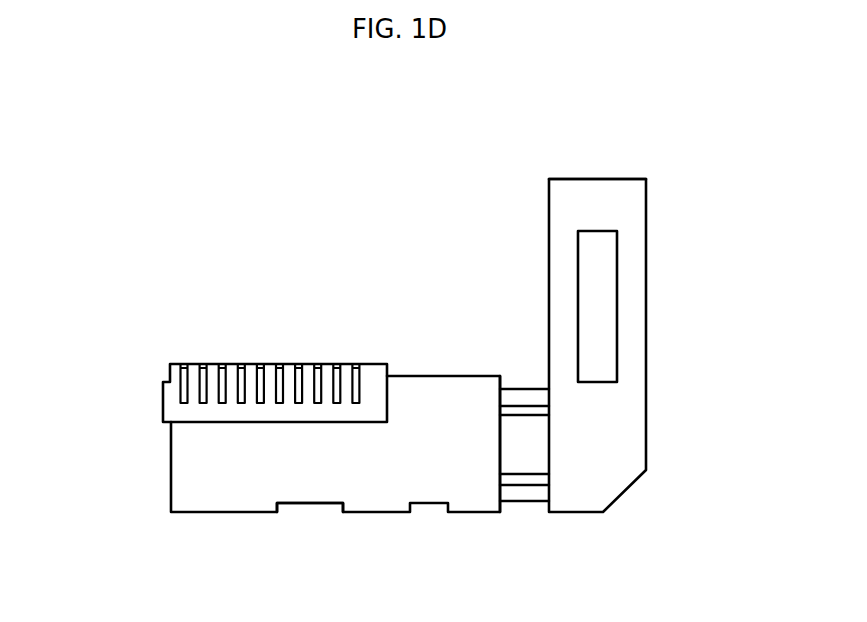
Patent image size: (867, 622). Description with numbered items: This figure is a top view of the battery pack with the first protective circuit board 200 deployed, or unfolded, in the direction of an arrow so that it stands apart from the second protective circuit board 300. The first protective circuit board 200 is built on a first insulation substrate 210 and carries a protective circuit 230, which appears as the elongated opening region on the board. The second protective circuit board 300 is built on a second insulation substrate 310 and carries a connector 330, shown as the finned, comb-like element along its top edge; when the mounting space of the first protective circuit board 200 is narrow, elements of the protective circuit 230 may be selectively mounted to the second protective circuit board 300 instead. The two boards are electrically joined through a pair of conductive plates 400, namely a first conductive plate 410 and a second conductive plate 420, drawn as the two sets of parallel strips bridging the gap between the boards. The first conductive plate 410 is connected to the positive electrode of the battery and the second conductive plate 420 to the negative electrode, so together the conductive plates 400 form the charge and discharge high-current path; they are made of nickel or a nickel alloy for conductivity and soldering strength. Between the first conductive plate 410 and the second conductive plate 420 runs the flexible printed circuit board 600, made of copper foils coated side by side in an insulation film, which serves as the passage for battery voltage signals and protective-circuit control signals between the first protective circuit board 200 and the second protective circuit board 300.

The first protective circuit board 200 is at (653, 304).
The first insulation substrate 210 is at (602, 197).
The protective circuit 230 is at (607, 315).
The second protective circuit board 300 is at (280, 479).
The second insulation substrate 310 is at (308, 488).
The connector 330 is at (163, 398).
The conductive plates 400 is at (616, 503).
The first conductive plate 410 is at (542, 396).
The second conductive plate 420 is at (565, 539).
The flexible printed circuit board 600 is at (507, 443).